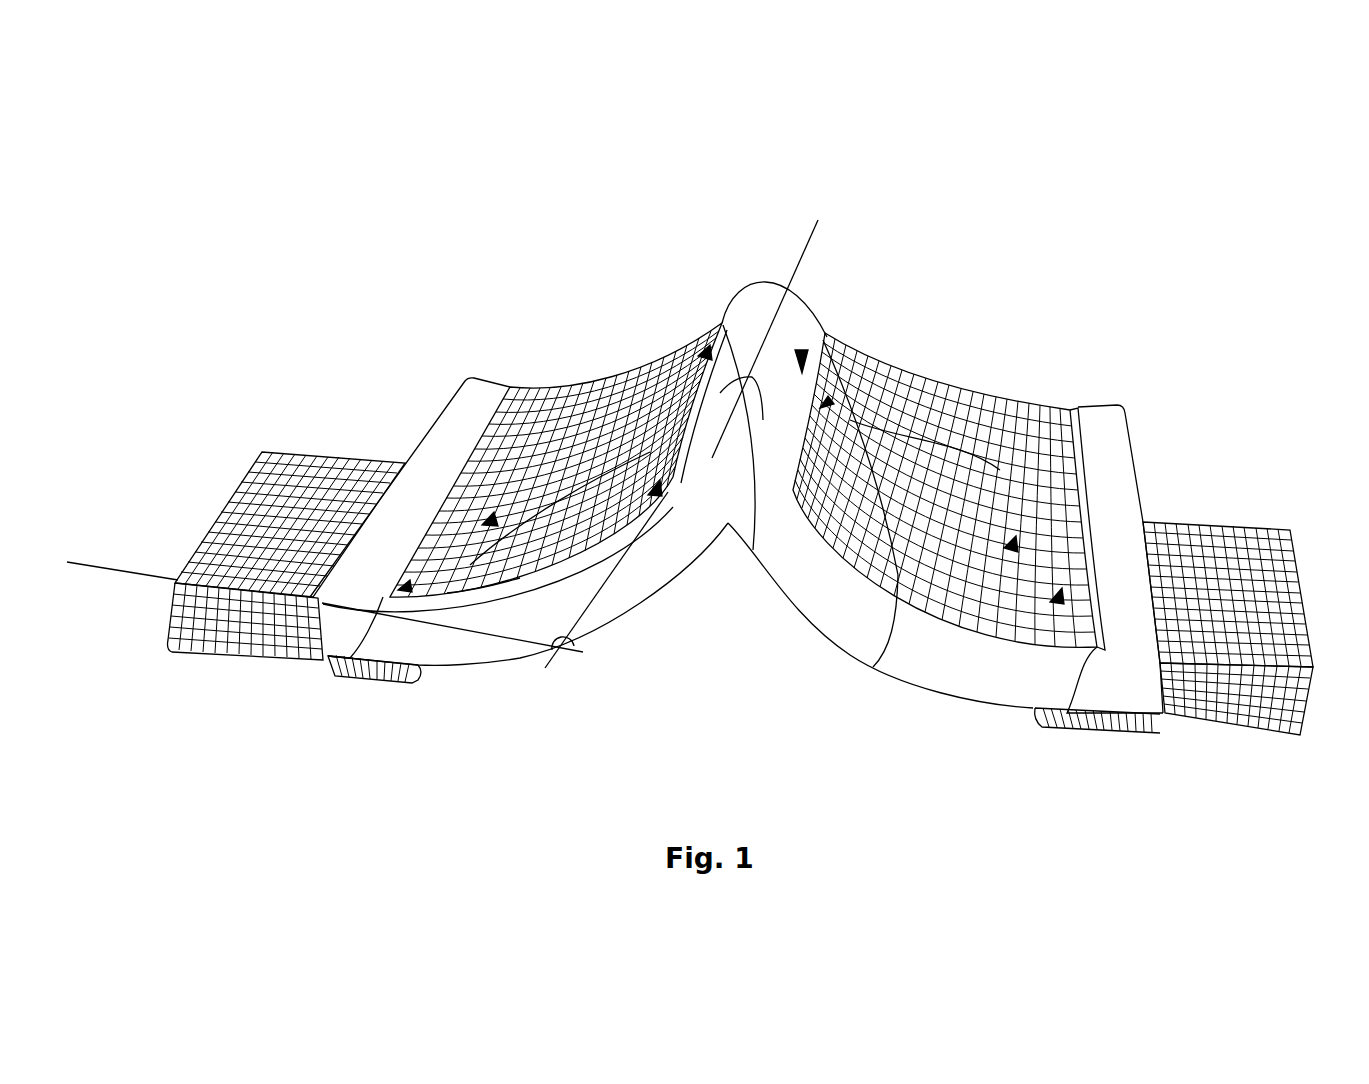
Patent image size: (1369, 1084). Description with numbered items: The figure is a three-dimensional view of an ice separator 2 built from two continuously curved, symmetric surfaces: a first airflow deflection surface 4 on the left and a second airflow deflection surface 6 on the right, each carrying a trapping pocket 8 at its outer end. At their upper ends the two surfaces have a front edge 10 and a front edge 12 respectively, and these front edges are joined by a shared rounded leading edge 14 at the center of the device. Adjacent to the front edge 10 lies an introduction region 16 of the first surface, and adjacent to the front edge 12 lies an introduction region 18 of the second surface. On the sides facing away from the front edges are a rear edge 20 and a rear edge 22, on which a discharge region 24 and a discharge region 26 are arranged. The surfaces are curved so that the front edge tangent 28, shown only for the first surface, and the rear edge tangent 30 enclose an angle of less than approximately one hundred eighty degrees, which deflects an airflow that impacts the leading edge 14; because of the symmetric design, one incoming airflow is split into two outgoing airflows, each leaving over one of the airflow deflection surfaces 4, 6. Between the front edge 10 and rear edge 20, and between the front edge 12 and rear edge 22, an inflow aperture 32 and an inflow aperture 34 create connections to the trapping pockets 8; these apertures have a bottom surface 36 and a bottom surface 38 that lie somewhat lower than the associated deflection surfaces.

The ice separator 2 is at (826, 172).
The first airflow deflection surface 4 is at (627, 378).
The second airflow deflection surface 6 is at (1027, 428).
The trapping pocket 8 is at (240, 487).
The front edge 10 is at (698, 343).
The front edge 12 is at (803, 352).
The leading edge 14 is at (753, 550).
The introduction region 16 is at (598, 565).
The introduction region 18 is at (832, 400).
The rear edge 20 is at (408, 462).
The rear edge 22 is at (1137, 487).
The discharge region 24 is at (397, 600).
The discharge region 26 is at (1075, 713).
The front edge tangent 28 is at (725, 325).
The rear edge tangent 30 is at (108, 588).
The inflow aperture 32 is at (527, 386).
The inflow aperture 34 is at (958, 440).
The bottom surface 36 is at (513, 590).
The bottom surface 38 is at (873, 667).